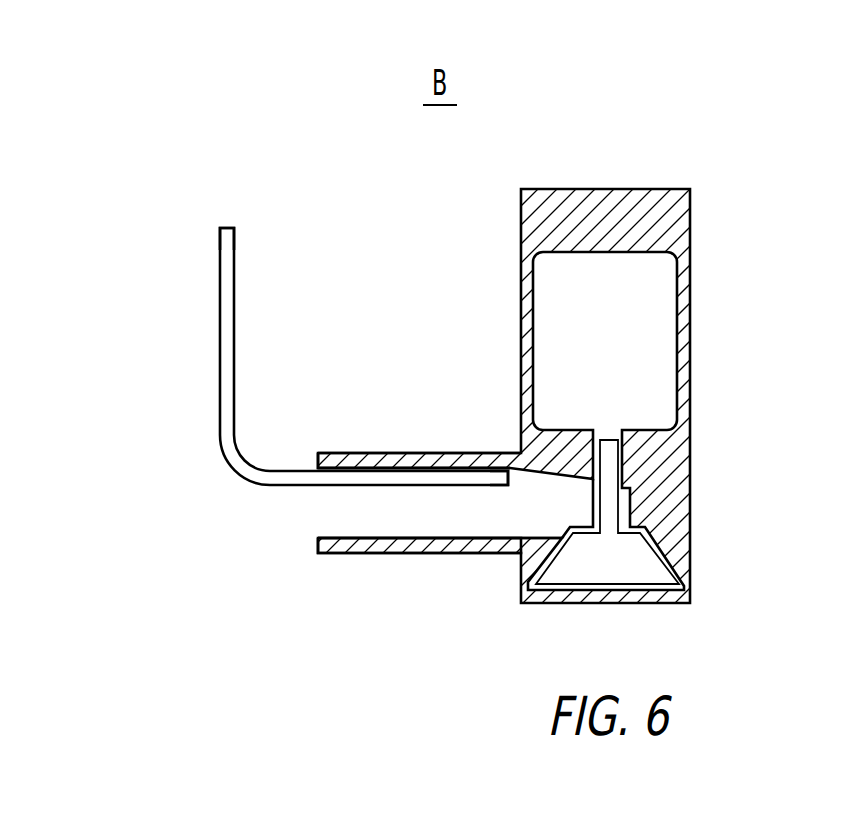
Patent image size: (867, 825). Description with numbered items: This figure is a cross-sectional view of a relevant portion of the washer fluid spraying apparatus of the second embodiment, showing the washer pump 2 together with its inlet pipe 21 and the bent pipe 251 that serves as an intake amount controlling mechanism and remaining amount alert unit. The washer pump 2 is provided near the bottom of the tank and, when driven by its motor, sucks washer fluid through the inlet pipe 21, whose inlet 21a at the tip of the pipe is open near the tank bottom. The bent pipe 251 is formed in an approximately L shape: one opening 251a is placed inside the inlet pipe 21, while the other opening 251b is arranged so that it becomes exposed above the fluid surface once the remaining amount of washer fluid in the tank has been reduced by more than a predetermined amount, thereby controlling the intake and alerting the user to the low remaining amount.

The washer pump 2 is at (684, 186).
The inlet pipe 21 is at (435, 453).
The inlet 21a is at (332, 514).
The bent pipe 251 is at (212, 362).
The opening 251a is at (508, 473).
The opening 251b is at (225, 227).